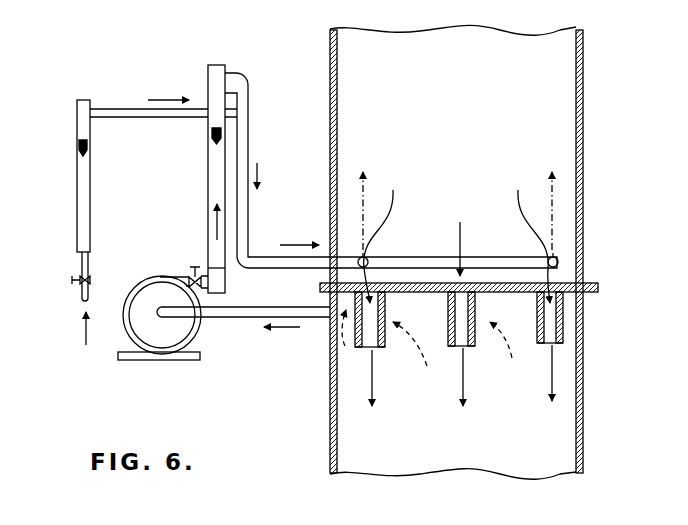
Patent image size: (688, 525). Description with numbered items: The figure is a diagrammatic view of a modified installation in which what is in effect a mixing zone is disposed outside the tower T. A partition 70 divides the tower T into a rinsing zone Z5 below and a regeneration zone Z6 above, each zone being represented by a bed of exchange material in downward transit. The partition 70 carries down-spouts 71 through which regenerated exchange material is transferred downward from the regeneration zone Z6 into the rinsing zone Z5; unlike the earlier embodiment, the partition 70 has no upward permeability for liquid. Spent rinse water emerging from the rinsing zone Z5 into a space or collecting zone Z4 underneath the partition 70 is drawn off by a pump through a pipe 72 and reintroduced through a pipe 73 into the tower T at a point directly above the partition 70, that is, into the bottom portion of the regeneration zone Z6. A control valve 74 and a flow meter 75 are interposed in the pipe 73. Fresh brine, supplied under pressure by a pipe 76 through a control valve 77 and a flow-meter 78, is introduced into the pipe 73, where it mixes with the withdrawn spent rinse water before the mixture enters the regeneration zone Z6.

The tower T is at (585, 71).
The partition 70 is at (505, 292).
The down-spouts 71 is at (384, 338).
The pipe 72 is at (242, 318).
The pipe 73 is at (268, 257).
The control valve 74 is at (195, 276).
The flow meter 75 is at (208, 190).
The pipe 76 is at (82, 298).
The control valve 77 is at (72, 280).
The flow-meter 78 is at (77, 157).
The collecting zone Z4 is at (422, 320).
The rinsing zone Z5 is at (538, 438).
The regeneration zone Z6 is at (520, 150).